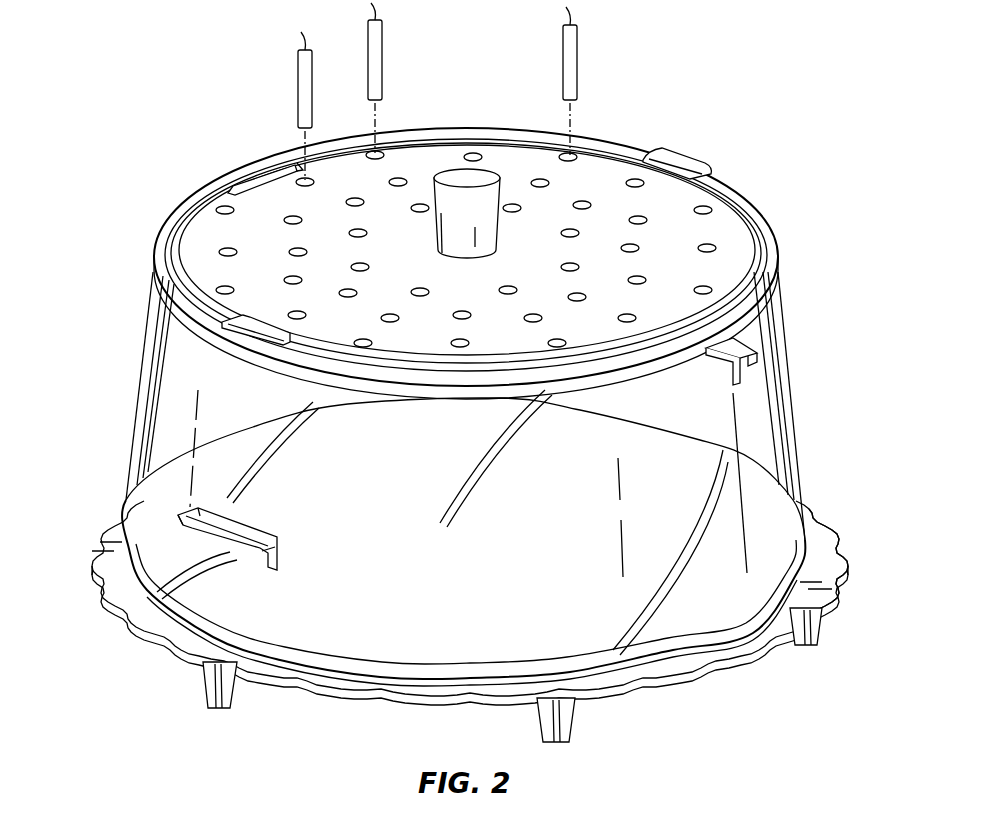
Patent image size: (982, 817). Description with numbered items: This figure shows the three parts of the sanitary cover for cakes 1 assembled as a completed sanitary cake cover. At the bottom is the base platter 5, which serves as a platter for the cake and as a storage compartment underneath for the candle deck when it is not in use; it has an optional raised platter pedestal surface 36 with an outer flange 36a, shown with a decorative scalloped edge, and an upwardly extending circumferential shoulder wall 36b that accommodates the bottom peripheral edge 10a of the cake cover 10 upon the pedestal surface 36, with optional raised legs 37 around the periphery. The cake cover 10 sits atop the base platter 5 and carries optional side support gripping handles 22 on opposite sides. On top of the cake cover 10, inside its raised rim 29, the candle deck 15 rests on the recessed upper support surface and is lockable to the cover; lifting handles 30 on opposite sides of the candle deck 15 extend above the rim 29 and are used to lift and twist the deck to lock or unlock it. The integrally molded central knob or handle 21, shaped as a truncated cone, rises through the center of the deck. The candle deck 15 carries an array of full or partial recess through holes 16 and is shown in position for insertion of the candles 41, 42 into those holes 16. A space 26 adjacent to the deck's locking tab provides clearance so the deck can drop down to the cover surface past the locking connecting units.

The sanitary cover for cakes 1 is at (130, 241).
The base platter 5 is at (106, 514).
The cake cover 10 is at (762, 428).
The bottom peripheral edge of cake cover 10a is at (690, 652).
The candle deck 15 is at (600, 185).
The recess through holes 16 is at (298, 181).
The central knob or handle 21 is at (466, 175).
The side support gripping handles 22 is at (742, 352).
The space 26 is at (291, 169).
The raised rim 29 is at (768, 236).
The lifting handles 30 is at (680, 158).
The raised platter pedestal surface 36 is at (418, 635).
The outer flange 36a is at (820, 530).
The circumferential shoulder wall 36b is at (745, 612).
The raised legs 37 is at (578, 714).
The candle 41 is at (298, 82).
The candles 42 is at (382, 66).